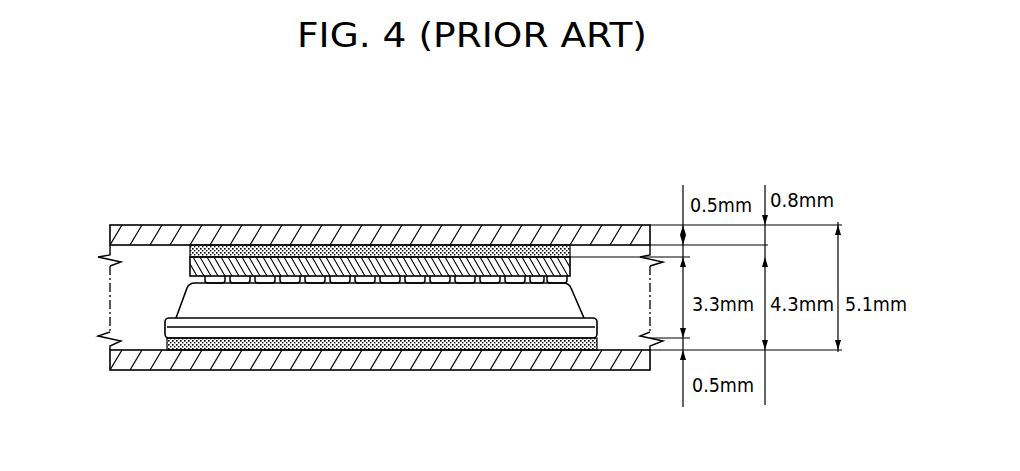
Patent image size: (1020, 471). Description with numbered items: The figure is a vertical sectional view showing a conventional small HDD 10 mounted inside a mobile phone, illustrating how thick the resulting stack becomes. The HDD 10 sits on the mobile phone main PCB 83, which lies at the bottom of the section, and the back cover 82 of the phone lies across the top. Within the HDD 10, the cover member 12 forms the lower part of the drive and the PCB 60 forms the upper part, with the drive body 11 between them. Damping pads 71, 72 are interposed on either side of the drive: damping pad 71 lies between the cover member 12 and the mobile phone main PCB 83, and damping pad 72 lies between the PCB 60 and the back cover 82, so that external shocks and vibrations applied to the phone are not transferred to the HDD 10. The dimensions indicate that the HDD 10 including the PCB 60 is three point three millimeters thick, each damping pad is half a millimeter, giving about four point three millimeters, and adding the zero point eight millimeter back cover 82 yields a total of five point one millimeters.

The small HDD 10 is at (156, 297).
The semiconductor chip 11 is at (400, 305).
The cover member 12 is at (500, 330).
The PCB 60 is at (385, 268).
The damping pad 71 is at (264, 350).
The damping pad 72 is at (236, 255).
The back cover 82 is at (120, 233).
The mobile phone main PCB 83 is at (149, 358).